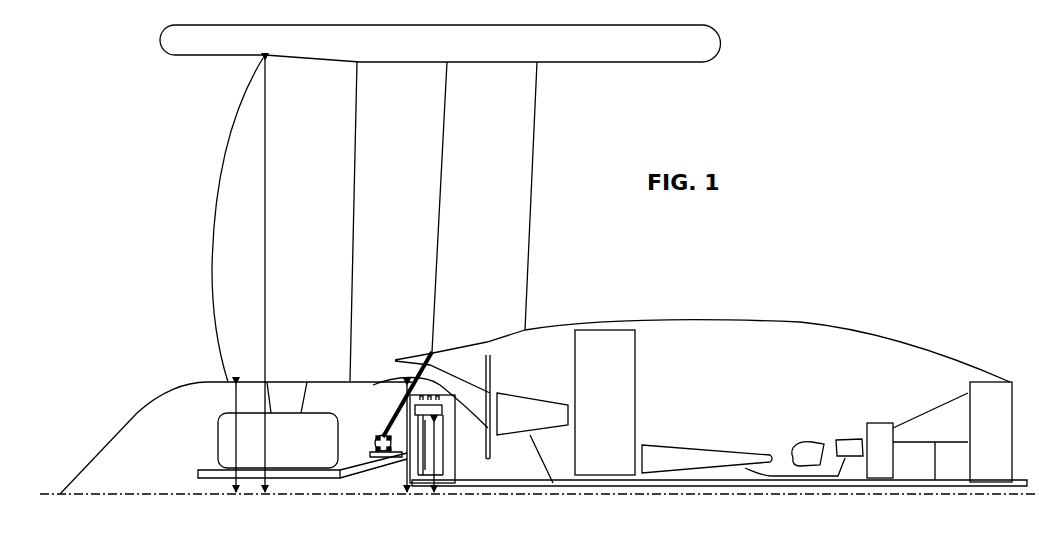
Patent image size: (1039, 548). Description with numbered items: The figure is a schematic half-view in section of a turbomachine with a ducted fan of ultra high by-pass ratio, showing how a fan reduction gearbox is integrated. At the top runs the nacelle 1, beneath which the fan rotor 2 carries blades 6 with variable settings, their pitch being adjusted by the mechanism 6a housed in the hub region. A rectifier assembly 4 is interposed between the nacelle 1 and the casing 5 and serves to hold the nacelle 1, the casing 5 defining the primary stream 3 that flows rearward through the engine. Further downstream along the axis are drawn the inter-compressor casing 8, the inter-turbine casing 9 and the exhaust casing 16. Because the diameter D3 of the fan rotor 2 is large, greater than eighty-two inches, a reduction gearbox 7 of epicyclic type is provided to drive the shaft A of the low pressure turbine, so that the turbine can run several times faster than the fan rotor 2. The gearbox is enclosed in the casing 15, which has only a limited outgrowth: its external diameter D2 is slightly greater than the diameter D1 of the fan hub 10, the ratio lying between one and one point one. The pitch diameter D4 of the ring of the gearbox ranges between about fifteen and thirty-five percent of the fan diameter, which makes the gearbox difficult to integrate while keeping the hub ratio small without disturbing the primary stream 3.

The nacelle 1 is at (464, 51).
The fan rotor 2 is at (210, 289).
The primary stream 3 is at (462, 406).
The rectifier assembly 4 is at (489, 217).
The casing 5 is at (400, 360).
The blades 6 is at (304, 217).
The mechanism 6a is at (300, 449).
The reduction gearbox 7 is at (450, 442).
The inter-compressor casing 8 is at (611, 407).
The inter-turbine casing 9 is at (883, 455).
The fan hub 10 is at (228, 383).
The casing of the reduction gearbox 15 is at (378, 381).
The exhaust casing 16 is at (996, 420).
The shaft of the low pressure turbine A is at (684, 488).
The diameter of the fan hub D1 is at (234, 440).
The diameter of the casing of the reduction gearbox D2 is at (405, 420).
The diameter of the fan rotor D3 is at (267, 248).
The pitch diameter of the ring D4 is at (436, 462).